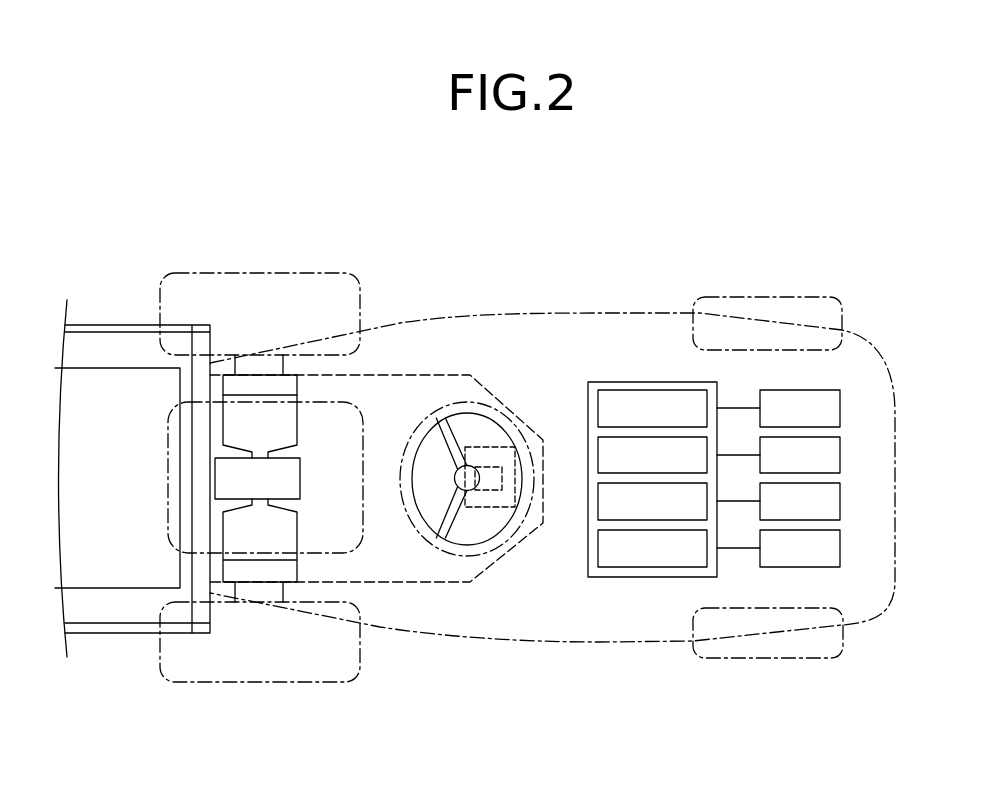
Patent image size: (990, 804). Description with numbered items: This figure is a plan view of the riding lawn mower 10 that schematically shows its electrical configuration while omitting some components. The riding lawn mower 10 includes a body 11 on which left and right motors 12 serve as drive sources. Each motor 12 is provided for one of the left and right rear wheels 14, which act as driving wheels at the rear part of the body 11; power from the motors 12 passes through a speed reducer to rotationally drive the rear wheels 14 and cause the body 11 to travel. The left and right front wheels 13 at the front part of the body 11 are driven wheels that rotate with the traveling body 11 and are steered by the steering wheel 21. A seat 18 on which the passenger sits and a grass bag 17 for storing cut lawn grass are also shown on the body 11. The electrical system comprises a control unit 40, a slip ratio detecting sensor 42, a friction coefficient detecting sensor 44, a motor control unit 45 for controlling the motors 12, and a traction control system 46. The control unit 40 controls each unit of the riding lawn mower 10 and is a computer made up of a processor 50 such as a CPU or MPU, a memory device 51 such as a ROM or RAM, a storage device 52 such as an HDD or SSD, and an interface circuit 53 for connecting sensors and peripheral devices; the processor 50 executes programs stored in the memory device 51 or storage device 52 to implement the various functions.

The riding lawn mower 10 is at (647, 230).
The body 11 is at (910, 452).
The motor 12 is at (280, 435).
The front wheel 13 is at (778, 296).
The rear wheel 14 is at (265, 272).
The grass bag 17 is at (98, 325).
The seat 18 is at (365, 528).
The steering wheel 21 is at (520, 538).
The control unit 40 is at (632, 390).
The slip ratio detecting sensor 42 is at (846, 405).
The friction coefficient detecting sensor 44 is at (846, 452).
The motor control unit 45 is at (846, 501).
The traction control system 46 is at (846, 549).
The processor 50 is at (598, 409).
The memory device 51 is at (598, 455).
The storage device 52 is at (598, 500).
The interface circuit 53 is at (598, 548).